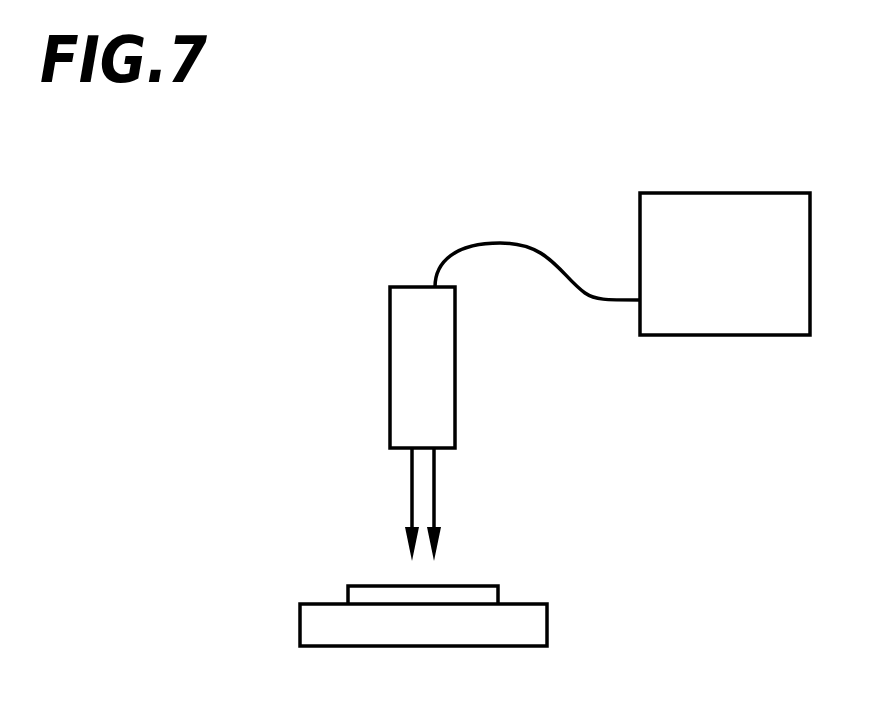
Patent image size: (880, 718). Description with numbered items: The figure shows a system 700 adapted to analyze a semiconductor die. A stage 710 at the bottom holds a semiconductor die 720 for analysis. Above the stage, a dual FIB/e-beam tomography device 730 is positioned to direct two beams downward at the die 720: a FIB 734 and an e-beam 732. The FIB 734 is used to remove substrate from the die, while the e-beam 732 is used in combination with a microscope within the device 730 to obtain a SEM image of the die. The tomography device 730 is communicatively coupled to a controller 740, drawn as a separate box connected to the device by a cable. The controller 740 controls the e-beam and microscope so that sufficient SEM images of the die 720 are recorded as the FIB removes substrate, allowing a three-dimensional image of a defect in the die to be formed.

The system 700 is at (442, 183).
The stage 710 is at (542, 627).
The semiconductor die 720 is at (490, 592).
The dual FIB/e-beam tomography device 730 is at (442, 320).
The e-beam 732 is at (410, 492).
The FIB 734 is at (436, 482).
The controller 740 is at (728, 193).